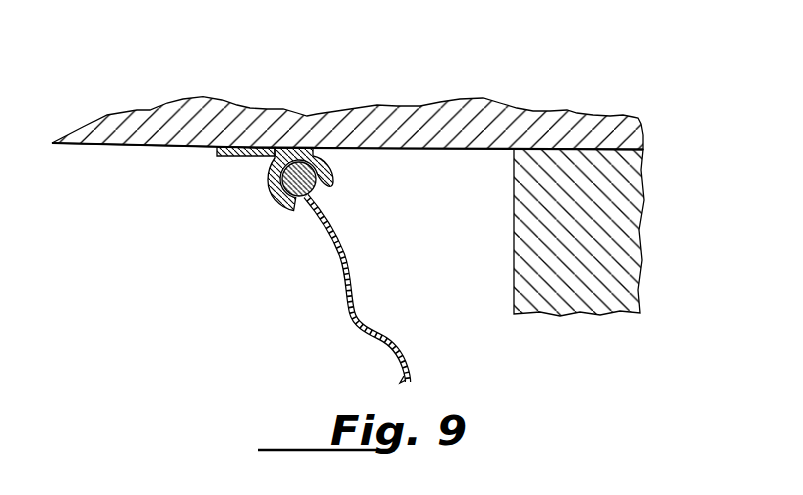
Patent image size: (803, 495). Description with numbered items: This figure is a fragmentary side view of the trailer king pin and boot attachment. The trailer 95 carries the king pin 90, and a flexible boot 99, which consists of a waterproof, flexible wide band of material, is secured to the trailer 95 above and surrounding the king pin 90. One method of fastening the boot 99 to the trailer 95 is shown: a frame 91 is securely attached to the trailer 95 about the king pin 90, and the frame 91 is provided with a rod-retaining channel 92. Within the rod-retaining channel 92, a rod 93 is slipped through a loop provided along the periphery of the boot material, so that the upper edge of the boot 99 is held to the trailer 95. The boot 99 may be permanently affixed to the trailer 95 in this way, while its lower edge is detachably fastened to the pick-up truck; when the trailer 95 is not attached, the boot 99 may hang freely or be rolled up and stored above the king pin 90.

The king pin 90 is at (601, 256).
The frame 91 is at (220, 156).
The rod-retaining channel 92 is at (268, 192).
The rod 93 is at (322, 173).
The trailer 95 is at (447, 125).
The flexible boot 99 is at (350, 308).